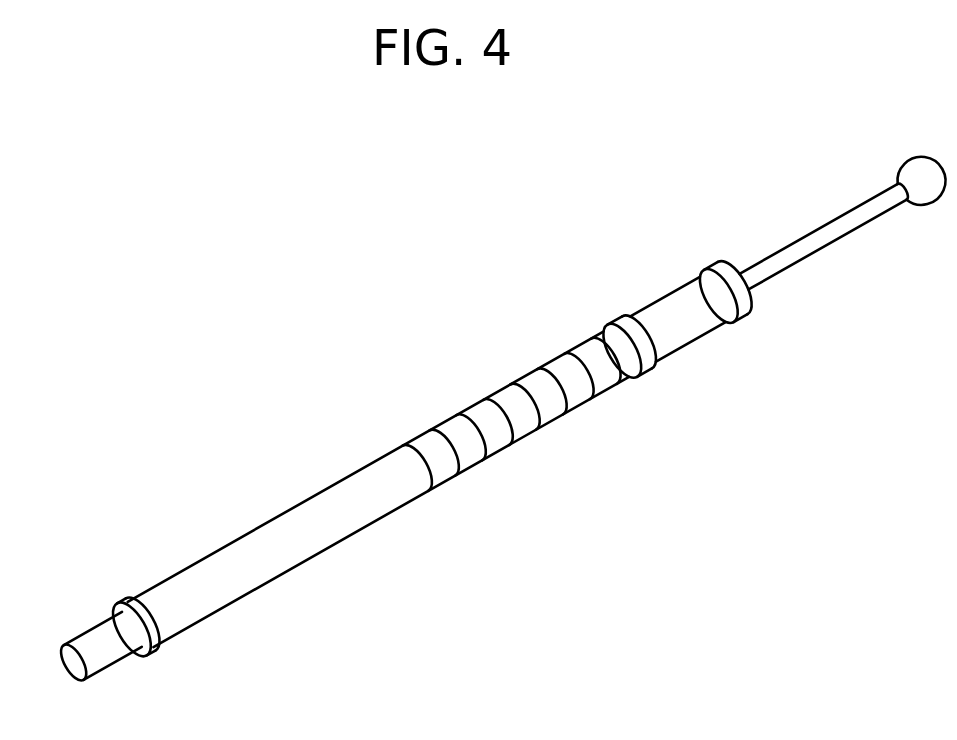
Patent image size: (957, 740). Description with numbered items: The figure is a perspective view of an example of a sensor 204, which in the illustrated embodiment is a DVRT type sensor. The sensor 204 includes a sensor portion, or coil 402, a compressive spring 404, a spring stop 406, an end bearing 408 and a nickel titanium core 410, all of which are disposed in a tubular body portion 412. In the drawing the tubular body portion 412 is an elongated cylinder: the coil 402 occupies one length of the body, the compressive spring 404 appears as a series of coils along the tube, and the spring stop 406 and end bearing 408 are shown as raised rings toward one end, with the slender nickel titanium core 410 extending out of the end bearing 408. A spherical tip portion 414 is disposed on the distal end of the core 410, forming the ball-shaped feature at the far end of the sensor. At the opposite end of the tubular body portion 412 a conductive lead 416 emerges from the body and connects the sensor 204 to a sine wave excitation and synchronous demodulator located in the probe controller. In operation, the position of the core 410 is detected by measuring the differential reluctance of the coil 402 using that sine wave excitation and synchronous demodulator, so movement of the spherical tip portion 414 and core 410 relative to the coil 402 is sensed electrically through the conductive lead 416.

The sensor 204 is at (408, 238).
The sensor portion (coil) 402 is at (233, 542).
The compressive spring 404 is at (468, 448).
The spring stop 406 is at (614, 320).
The end bearing 408 is at (718, 260).
The nickel titanium core 410 is at (842, 236).
The tubular body portion 412 is at (702, 327).
The spherical tip portion 414 is at (917, 155).
The conductive lead 416 is at (88, 628).